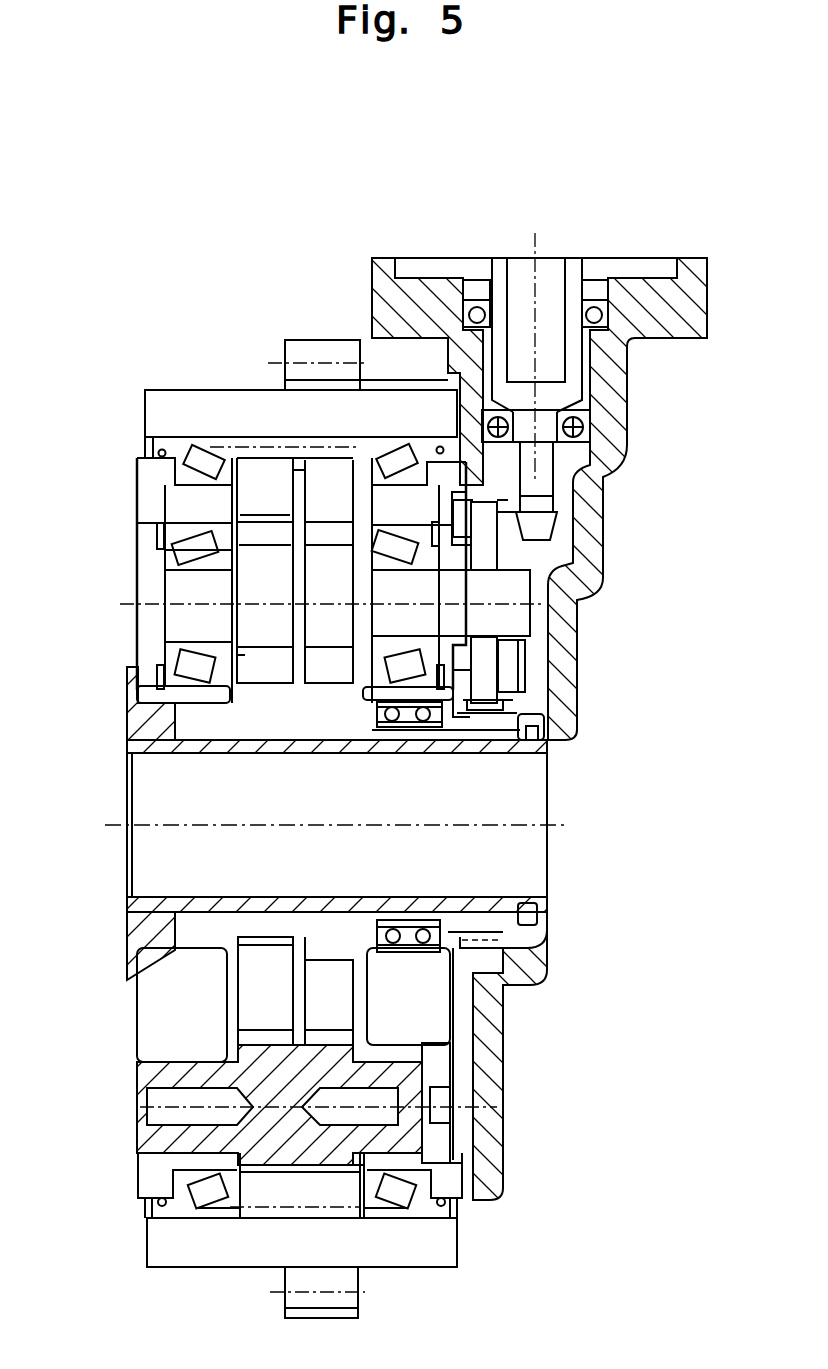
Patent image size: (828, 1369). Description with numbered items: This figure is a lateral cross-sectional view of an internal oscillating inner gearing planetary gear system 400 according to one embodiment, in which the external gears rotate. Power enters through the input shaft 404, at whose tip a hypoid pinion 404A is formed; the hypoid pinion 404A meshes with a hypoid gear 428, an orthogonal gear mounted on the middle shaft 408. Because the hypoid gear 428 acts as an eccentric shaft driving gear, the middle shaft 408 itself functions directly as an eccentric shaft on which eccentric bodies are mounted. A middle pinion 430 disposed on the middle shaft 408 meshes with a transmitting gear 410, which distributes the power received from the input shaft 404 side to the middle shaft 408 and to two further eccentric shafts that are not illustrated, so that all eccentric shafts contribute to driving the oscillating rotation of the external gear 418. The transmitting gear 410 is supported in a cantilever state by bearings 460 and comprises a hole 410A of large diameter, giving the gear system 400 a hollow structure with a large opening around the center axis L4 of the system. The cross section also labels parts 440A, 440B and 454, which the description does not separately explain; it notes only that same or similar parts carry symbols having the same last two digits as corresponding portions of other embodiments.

The gear system 400 is at (594, 240).
The input shaft 404 is at (557, 392).
The hypoid pinion 404A is at (480, 538).
The middle shaft 408 is at (510, 622).
The transmitting gear 410 is at (493, 725).
The hole 410A is at (483, 743).
The external gear 418 is at (322, 478).
The hypoid gear 428 is at (527, 675).
The middle pinion 430 is at (520, 568).
The tapered roller bearing 440A is at (233, 583).
The tapered roller bearing 440B is at (328, 570).
The seal 454 is at (540, 897).
The bearings 460 is at (422, 737).
The center axis L4 is at (433, 827).